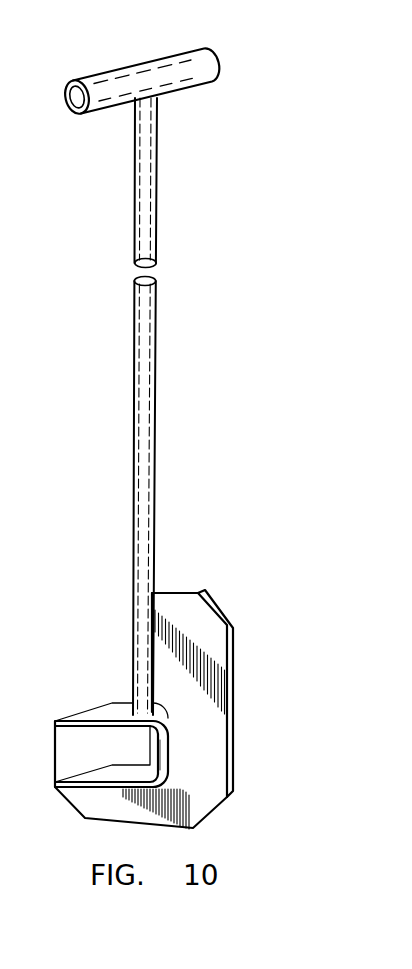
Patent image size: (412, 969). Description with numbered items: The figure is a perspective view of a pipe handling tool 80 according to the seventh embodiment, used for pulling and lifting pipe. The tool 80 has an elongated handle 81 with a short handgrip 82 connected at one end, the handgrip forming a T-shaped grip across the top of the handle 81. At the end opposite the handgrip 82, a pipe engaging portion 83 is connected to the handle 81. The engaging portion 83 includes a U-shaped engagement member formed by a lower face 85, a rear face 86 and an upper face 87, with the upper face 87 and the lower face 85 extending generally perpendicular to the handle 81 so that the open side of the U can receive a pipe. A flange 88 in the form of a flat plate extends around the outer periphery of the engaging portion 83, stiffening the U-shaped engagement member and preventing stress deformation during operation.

The pipe handling tool 80 is at (224, 432).
The elongated handle 81 is at (157, 342).
The handgrip 82 is at (167, 72).
The pipe engaging portion 83 is at (271, 624).
The lower face 85 is at (102, 773).
The rear face 86 is at (158, 750).
The upper face 87 is at (72, 724).
The flange 88 is at (195, 808).